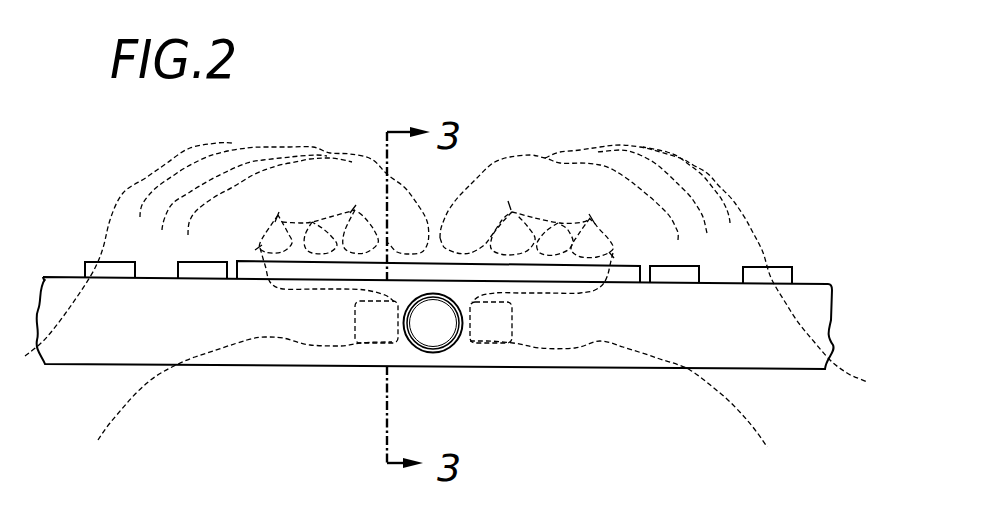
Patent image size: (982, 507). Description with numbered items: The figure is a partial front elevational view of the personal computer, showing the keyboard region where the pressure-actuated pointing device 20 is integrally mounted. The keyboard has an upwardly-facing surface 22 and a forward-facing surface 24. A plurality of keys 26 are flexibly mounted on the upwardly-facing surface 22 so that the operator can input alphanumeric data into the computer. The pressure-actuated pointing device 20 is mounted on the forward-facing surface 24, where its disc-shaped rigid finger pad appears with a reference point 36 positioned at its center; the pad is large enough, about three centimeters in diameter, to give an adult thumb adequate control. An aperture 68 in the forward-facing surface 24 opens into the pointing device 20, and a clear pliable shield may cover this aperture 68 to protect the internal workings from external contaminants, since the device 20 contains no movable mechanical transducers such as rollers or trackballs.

The pressure-actuated pointing device 20 is at (462, 337).
The upwardly-facing surface 22 is at (805, 285).
The forward-facing surface 24 is at (807, 312).
The keys 26 is at (777, 273).
The reference point 36 is at (433, 322).
The aperture 68 is at (462, 340).